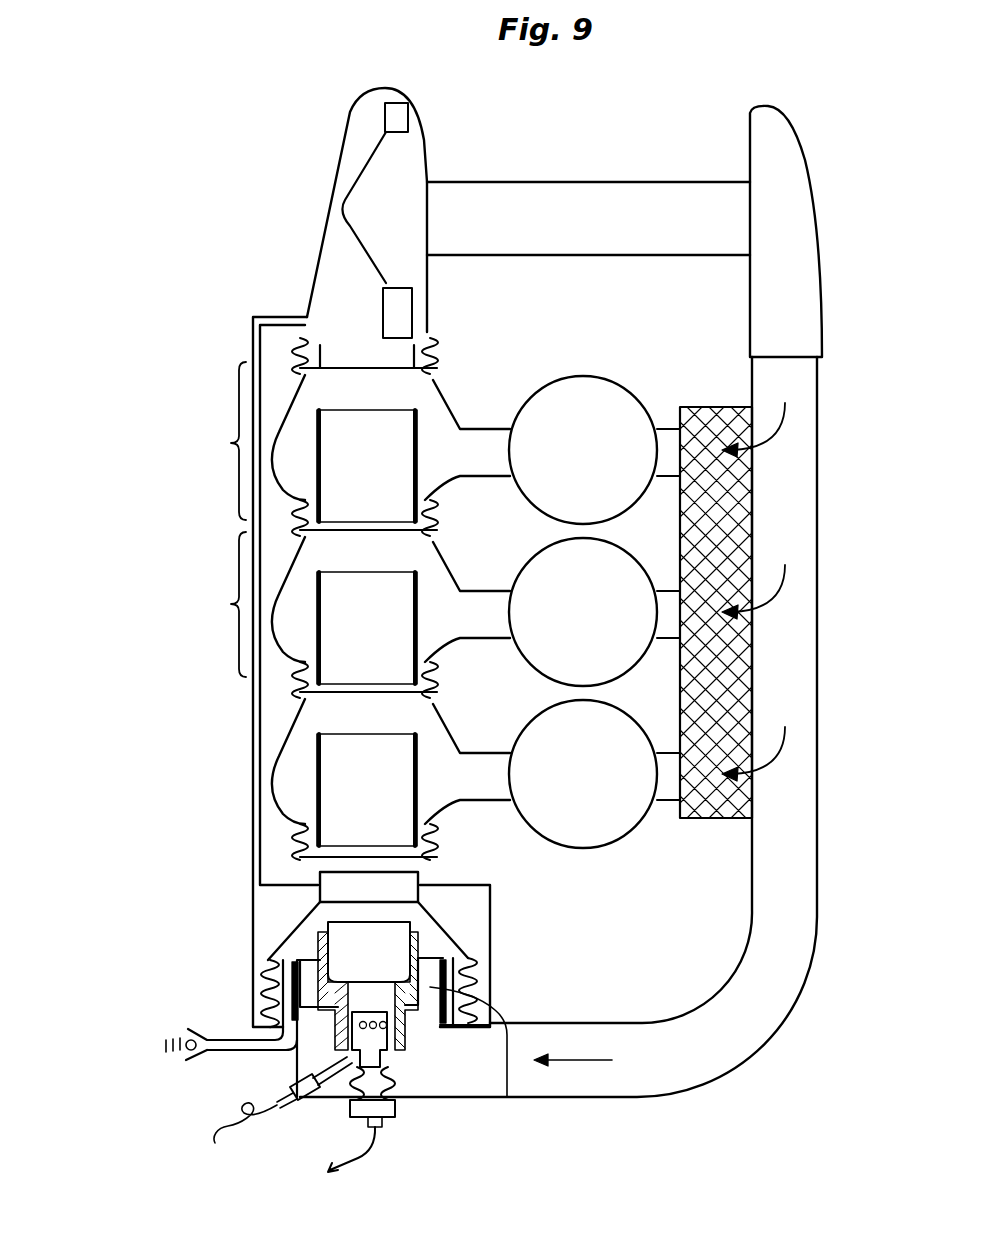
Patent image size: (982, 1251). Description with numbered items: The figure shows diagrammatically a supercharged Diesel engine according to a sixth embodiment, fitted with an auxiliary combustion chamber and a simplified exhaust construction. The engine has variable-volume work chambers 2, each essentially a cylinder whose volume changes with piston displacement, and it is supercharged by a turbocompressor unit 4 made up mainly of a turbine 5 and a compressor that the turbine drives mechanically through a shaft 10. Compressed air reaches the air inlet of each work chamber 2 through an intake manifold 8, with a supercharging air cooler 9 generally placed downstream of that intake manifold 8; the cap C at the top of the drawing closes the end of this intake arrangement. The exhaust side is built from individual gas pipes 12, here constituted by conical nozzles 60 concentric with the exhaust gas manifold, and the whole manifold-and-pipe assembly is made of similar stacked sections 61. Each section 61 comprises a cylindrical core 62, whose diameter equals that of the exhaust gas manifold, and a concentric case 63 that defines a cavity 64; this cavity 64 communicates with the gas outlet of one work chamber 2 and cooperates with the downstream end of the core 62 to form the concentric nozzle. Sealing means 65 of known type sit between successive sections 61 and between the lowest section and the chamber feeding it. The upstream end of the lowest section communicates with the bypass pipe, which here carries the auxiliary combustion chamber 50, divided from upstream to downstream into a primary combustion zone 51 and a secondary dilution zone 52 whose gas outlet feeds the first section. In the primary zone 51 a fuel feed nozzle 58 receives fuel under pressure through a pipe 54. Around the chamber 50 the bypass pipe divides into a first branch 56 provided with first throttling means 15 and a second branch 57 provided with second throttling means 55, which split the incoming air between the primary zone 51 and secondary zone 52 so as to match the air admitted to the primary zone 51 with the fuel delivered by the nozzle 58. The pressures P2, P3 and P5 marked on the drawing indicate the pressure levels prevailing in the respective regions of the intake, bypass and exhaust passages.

The work chamber 2 is at (598, 388).
The turbocompressor unit 4 is at (548, 170).
The turbine 5 is at (405, 163).
The intake manifold 8 is at (812, 667).
The supercharging air cooler 9 is at (713, 821).
The shaft 10 is at (627, 197).
The gas pipe 12 is at (499, 640).
The first throttling means 15 is at (405, 921).
The auxiliary combustion chamber 50 is at (497, 958).
The primary combustion zone 51 is at (385, 976).
The secondary dilution zone 52 is at (406, 912).
The pipe 54 is at (366, 1166).
The second throttling means 55 is at (346, 1058).
The first branch 56 is at (480, 1045).
The second branch 57 is at (425, 1062).
The fuel feed nozzle 58 is at (380, 1063).
The conical nozzle 60 is at (452, 572).
The section 61 is at (222, 519).
The cylindrical core 62 is at (418, 466).
The concentric case 63 is at (275, 765).
The cavity 64 is at (449, 800).
The sealing means 65 is at (440, 521).
The cap C is at (788, 197).
The pressure P2 is at (786, 953).
The pressure P3 is at (262, 906).
The pressure P5 is at (345, 800).